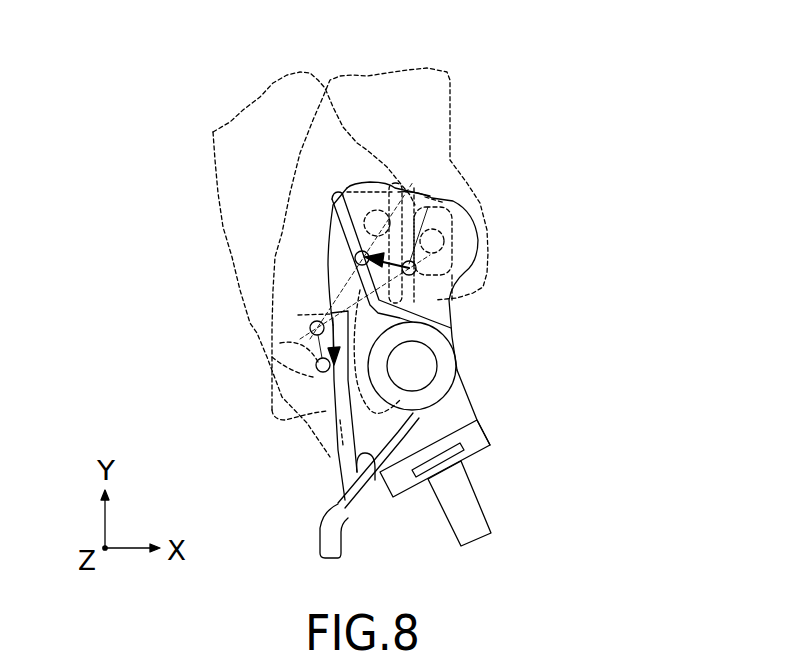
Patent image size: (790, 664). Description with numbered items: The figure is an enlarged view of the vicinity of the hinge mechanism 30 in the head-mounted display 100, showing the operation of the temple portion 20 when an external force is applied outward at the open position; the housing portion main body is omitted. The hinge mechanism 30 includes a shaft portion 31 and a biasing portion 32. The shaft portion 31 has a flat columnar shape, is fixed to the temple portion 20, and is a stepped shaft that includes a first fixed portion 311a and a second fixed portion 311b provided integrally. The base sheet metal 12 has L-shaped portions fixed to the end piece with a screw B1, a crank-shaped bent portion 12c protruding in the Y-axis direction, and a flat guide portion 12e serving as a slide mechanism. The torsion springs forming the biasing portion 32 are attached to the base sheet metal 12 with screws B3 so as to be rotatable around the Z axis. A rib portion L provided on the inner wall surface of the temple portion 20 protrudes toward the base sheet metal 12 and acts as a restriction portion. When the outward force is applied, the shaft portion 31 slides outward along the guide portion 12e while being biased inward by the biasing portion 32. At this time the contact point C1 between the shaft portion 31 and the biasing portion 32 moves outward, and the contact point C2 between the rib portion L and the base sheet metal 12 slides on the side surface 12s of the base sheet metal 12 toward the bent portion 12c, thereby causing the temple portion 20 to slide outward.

The head-mounted display 100 is at (216, 66).
The temple portion 20 is at (226, 167).
The hinge mechanism 30 is at (497, 210).
The shaft portion 31 is at (365, 196).
The guide portion 12e is at (408, 222).
The first fixed portion 311a is at (428, 207).
The second fixed portion 311b is at (433, 245).
The contact point C1 is at (355, 259).
The contact point C2 is at (318, 352).
The rib portion L is at (315, 369).
The screw B3 is at (445, 360).
The base sheet metal 12 is at (463, 410).
The side surface 12s is at (332, 435).
The biasing portion 32 is at (348, 482).
The screw B1 is at (463, 497).
The crank-shaped bent portion 12c is at (322, 550).